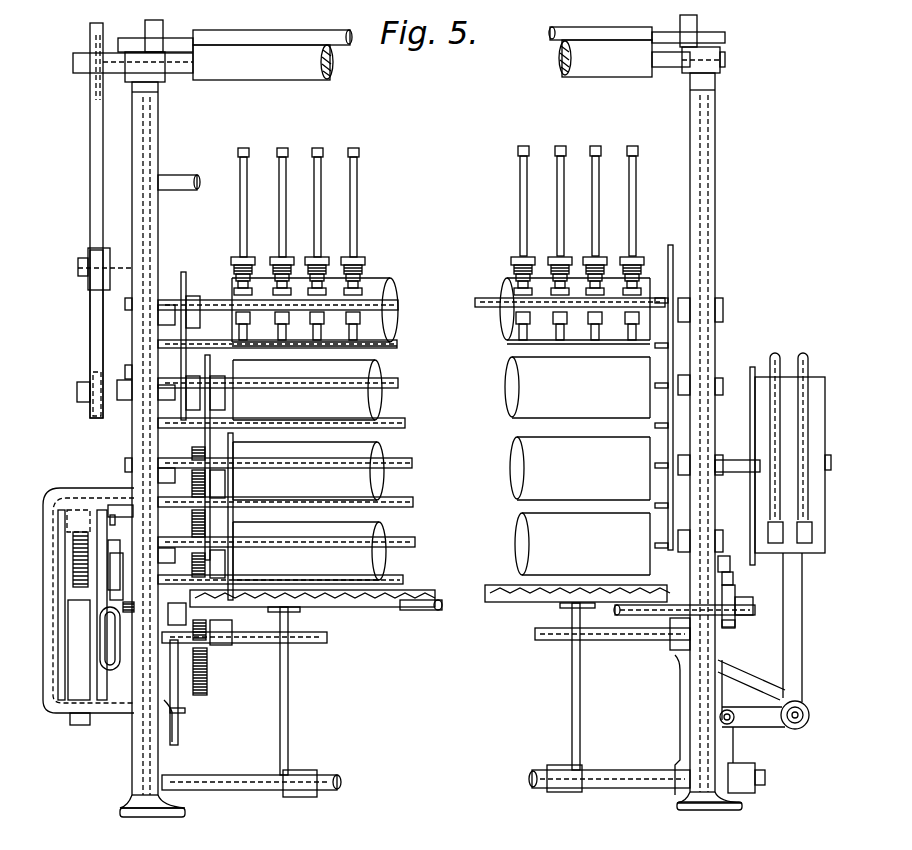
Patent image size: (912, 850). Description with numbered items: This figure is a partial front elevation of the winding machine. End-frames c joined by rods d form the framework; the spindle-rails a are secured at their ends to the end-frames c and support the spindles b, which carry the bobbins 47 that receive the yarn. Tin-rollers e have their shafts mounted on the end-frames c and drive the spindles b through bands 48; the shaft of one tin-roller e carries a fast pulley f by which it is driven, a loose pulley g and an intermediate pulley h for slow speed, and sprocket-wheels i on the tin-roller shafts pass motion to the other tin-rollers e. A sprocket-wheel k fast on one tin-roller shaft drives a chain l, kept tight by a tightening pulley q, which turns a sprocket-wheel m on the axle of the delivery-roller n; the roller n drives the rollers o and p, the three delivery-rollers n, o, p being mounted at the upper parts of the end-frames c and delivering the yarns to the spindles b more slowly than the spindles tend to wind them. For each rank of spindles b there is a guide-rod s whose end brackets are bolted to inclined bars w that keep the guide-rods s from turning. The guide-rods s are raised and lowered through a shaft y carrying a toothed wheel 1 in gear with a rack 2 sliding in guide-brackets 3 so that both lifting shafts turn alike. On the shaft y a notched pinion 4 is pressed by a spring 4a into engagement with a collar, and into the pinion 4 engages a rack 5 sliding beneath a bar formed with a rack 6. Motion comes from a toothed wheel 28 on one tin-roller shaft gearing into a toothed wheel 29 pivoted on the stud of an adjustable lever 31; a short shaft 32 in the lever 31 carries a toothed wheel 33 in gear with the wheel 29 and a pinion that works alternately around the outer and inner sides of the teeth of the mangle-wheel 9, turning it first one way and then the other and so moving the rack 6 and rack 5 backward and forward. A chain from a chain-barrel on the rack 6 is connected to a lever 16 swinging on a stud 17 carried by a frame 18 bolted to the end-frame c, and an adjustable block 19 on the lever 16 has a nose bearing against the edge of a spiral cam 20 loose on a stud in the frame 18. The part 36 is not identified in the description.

The end-frame c is at (131, 452).
The sprocket-wheel m is at (90, 93).
The chain l is at (90, 332).
The delivery-roller o is at (422, 60).
The delivery-roller n is at (556, 64).
The delivery-roller p is at (550, 35).
The rod d is at (199, 184).
The tightening pulley q is at (80, 256).
The sprocket-wheel k is at (95, 412).
The spindle-rail a is at (398, 300).
The tin-roller e is at (441, 429).
The band 48 is at (385, 347).
The bobbin 47 is at (238, 157).
The spindle b is at (234, 280).
The sprocket-wheel i is at (234, 562).
The toothed wheel 28 is at (194, 450).
The toothed wheel 29 is at (211, 543).
The toothed wheel 33 is at (207, 684).
The short shaft 32 is at (232, 628).
The bracket 36 is at (186, 712).
The lever 31 is at (178, 745).
The shaft y is at (443, 605).
The toothed wheel 1 is at (733, 630).
The rack 2 is at (738, 582).
The guide-bracket 3 is at (730, 580).
The fast pulley f is at (821, 377).
The loose pulley g is at (758, 370).
The intermediate pulley h is at (787, 377).
The inclined bar w is at (670, 250).
The guide-rod s is at (668, 268).
The frame 18 is at (67, 490).
The cam 20 is at (56, 700).
The lever 16 is at (98, 510).
The stud 17 is at (120, 508).
The block 19 is at (68, 726).
The mangle-wheel 9 is at (80, 726).
The rack 6 is at (118, 522).
The rack 5 is at (117, 561).
The pinion 4 is at (124, 598).
The spring 4a is at (112, 672).